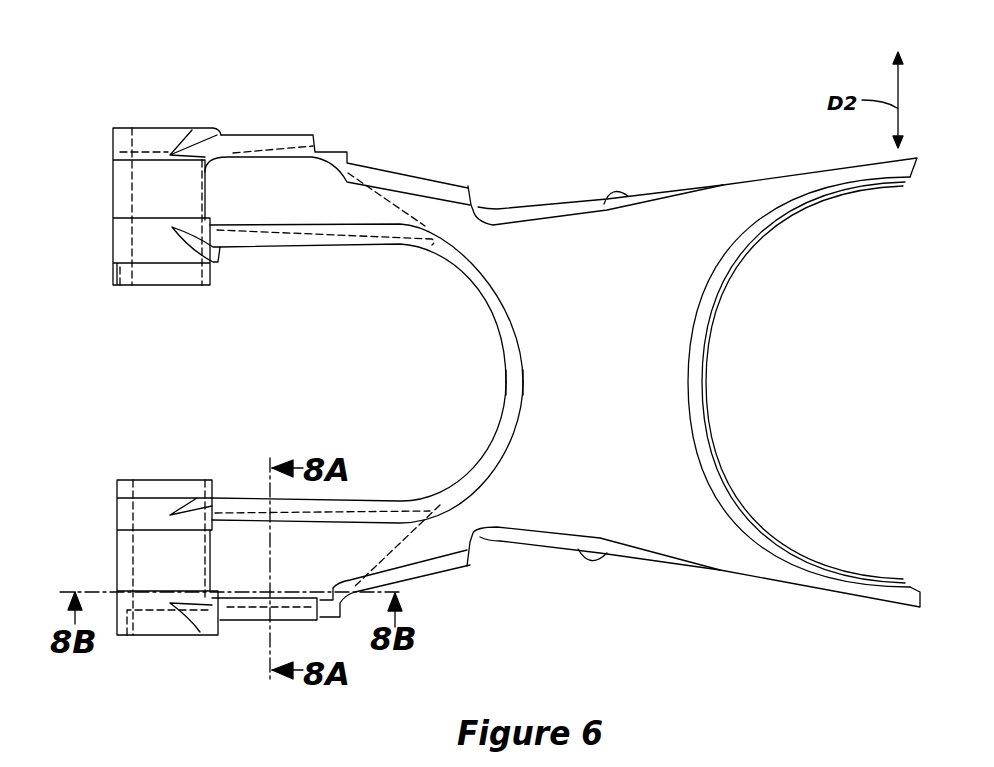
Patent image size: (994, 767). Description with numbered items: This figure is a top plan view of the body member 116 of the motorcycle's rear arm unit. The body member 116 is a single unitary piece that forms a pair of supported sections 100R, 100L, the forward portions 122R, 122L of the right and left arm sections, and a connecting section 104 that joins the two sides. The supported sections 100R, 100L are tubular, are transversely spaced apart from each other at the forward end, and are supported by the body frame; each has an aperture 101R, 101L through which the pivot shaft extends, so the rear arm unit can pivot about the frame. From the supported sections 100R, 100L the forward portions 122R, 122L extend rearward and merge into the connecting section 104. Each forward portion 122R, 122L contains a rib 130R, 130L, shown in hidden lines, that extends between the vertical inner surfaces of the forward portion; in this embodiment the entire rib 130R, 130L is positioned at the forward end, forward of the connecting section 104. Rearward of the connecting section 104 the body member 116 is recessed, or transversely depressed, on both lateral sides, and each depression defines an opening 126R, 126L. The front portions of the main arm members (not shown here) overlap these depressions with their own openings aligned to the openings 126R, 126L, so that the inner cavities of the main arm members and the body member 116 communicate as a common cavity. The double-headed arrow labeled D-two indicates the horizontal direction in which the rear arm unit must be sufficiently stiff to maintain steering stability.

The supported section 100R is at (145, 190).
The aperture 101R is at (168, 128).
The forward portion 122R is at (445, 125).
The rib 130R is at (358, 232).
The opening 126R is at (605, 206).
The connecting section 104 is at (547, 378).
The body member 116 is at (760, 124).
The supported section 100L is at (144, 560).
The aperture 101L is at (165, 638).
The forward portion 122L is at (218, 648).
The rib 130L is at (370, 507).
The opening 126L is at (610, 552).